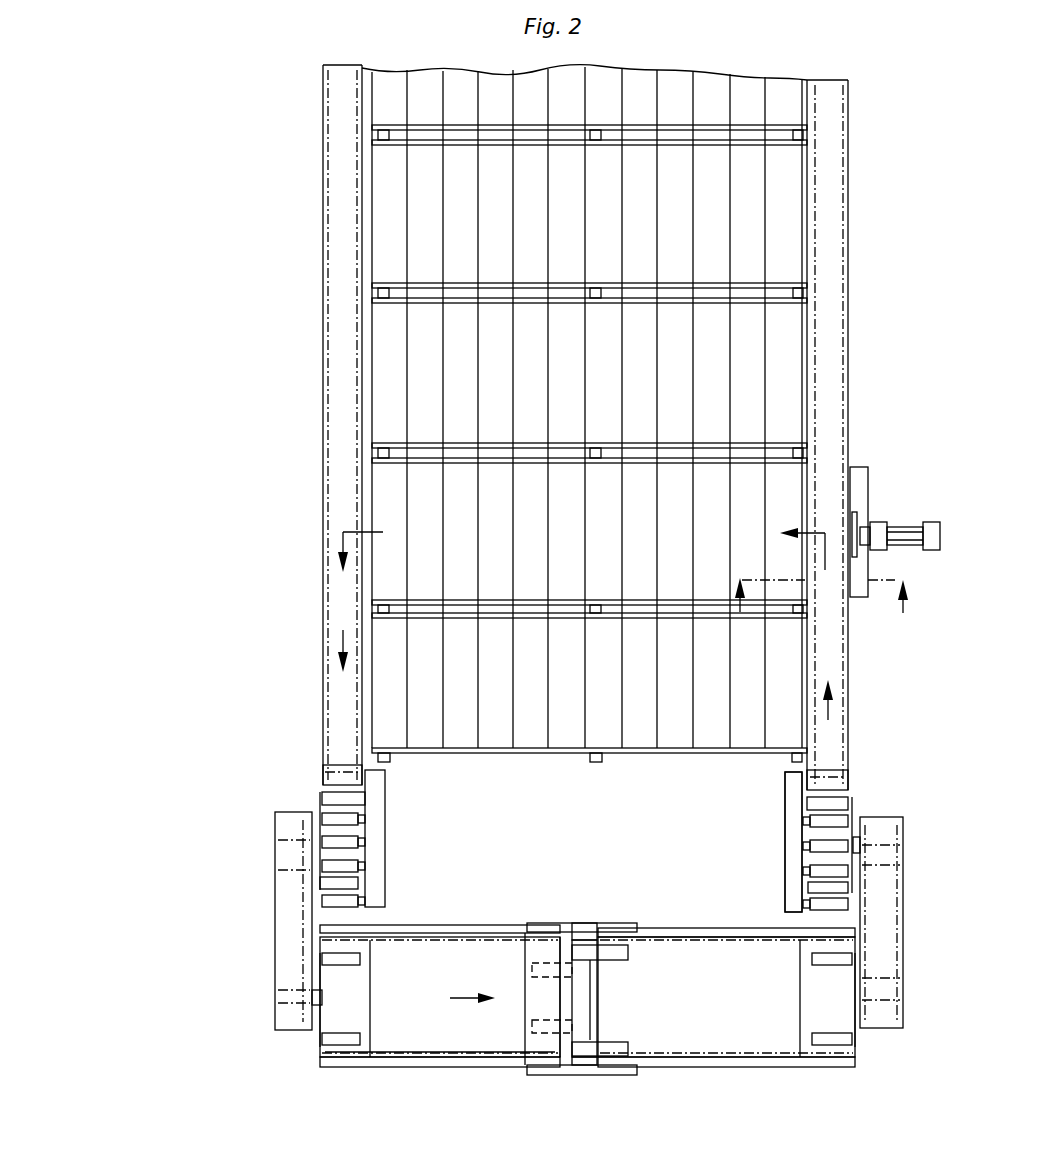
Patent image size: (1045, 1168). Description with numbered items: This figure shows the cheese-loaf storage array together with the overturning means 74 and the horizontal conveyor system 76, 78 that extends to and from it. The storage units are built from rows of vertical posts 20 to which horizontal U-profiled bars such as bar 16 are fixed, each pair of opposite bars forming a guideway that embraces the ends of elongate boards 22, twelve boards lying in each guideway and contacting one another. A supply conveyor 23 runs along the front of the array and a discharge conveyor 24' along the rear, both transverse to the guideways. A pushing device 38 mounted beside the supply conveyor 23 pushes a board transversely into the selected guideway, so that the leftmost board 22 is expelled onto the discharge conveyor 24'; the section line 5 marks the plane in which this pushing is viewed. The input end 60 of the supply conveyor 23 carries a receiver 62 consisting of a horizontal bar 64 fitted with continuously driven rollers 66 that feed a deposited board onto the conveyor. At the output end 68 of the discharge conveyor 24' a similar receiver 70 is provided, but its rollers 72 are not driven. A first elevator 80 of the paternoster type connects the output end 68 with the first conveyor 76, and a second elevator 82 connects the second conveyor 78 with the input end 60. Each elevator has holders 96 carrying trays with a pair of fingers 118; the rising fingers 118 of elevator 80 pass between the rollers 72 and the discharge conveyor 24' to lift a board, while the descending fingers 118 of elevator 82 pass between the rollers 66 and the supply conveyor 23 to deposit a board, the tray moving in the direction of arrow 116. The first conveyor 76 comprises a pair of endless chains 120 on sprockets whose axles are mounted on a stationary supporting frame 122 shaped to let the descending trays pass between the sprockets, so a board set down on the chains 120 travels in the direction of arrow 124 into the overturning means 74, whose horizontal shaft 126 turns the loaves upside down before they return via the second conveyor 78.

The section line 5- 5 is at (816, 595).
The U-profiled bar 16 is at (430, 603).
The vertical post 20 is at (385, 445).
The board 22 is at (542, 537).
The supply conveyor 23 is at (838, 297).
The discharge conveyor 24' is at (311, 425).
The pushing device 38 is at (875, 511).
The input end 60 is at (847, 767).
The receiver 62 is at (775, 843).
The horizontal bar 64 is at (790, 796).
The rollers 66 is at (855, 903).
The output end 68 is at (322, 765).
The receiver 70 is at (388, 814).
The rollers 72 is at (360, 900).
The overturning means 74 is at (600, 1001).
The first conveyor 76 is at (456, 1035).
The second conveyor 78 is at (741, 1021).
The first elevator 80 is at (283, 838).
The second elevator 82 is at (890, 963).
The holder 96 is at (325, 796).
The arrow 116 is at (834, 700).
The fingers 118 is at (352, 800).
The endless chains 120 is at (478, 925).
The supporting frame 122 is at (400, 1050).
The arrow 124 is at (486, 988).
The horizontal shaft 126 is at (580, 923).